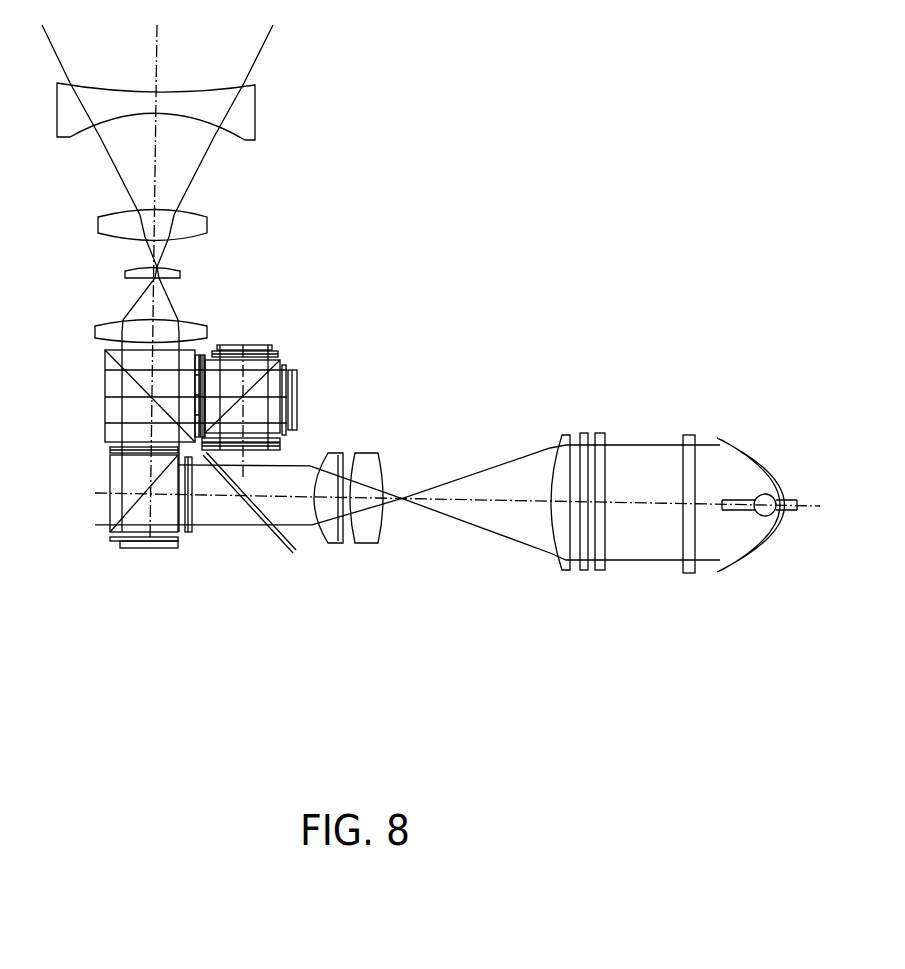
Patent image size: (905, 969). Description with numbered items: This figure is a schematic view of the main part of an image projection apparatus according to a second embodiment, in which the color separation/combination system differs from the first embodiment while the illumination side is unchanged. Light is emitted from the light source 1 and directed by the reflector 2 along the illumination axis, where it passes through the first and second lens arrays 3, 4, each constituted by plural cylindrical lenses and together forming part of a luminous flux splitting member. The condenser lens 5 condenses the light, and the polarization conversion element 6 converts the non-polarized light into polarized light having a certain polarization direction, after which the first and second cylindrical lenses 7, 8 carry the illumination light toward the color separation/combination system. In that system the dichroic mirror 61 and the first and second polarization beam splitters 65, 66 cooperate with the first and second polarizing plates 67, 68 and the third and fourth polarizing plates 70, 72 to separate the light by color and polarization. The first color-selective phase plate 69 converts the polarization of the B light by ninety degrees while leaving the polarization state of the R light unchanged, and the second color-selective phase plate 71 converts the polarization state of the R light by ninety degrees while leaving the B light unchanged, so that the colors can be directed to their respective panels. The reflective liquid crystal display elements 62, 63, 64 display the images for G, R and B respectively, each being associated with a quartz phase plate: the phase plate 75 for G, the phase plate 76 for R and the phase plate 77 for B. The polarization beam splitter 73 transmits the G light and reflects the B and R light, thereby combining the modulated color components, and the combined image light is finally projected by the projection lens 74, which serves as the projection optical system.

The light source 1 is at (778, 490).
The reflector 2 is at (735, 445).
The first lens array 3 is at (690, 432).
The second lens array 4 is at (600, 430).
The condenser lens 5 is at (370, 448).
The polarization conversion element 6 is at (585, 430).
The first cylindrical lens 7 is at (565, 430).
The second cylindrical lens 8 is at (338, 447).
The dichroic mirror 61 is at (288, 558).
The reflective liquid crystal display element 62 is at (140, 552).
The reflective liquid crystal display element 63 is at (297, 380).
The reflective liquid crystal display element 64 is at (260, 346).
The first polarization beam splitter 65 is at (108, 523).
The second polarization beam splitter 66 is at (278, 366).
The first polarizing plate 67 is at (188, 535).
The second polarizing plate 68 is at (280, 447).
The first color-selective phase plate 69 is at (281, 441).
The third polarizing plate 70 is at (107, 450).
The second color-selective phase plate 71 is at (213, 372).
The fourth polarizing plate 72 is at (203, 356).
The polarization beam splitter 73 is at (105, 385).
The projection lens 74 is at (240, 203).
The phase plate 75 is at (112, 541).
The phase plate 76 is at (283, 371).
The phase plate 77 is at (283, 360).